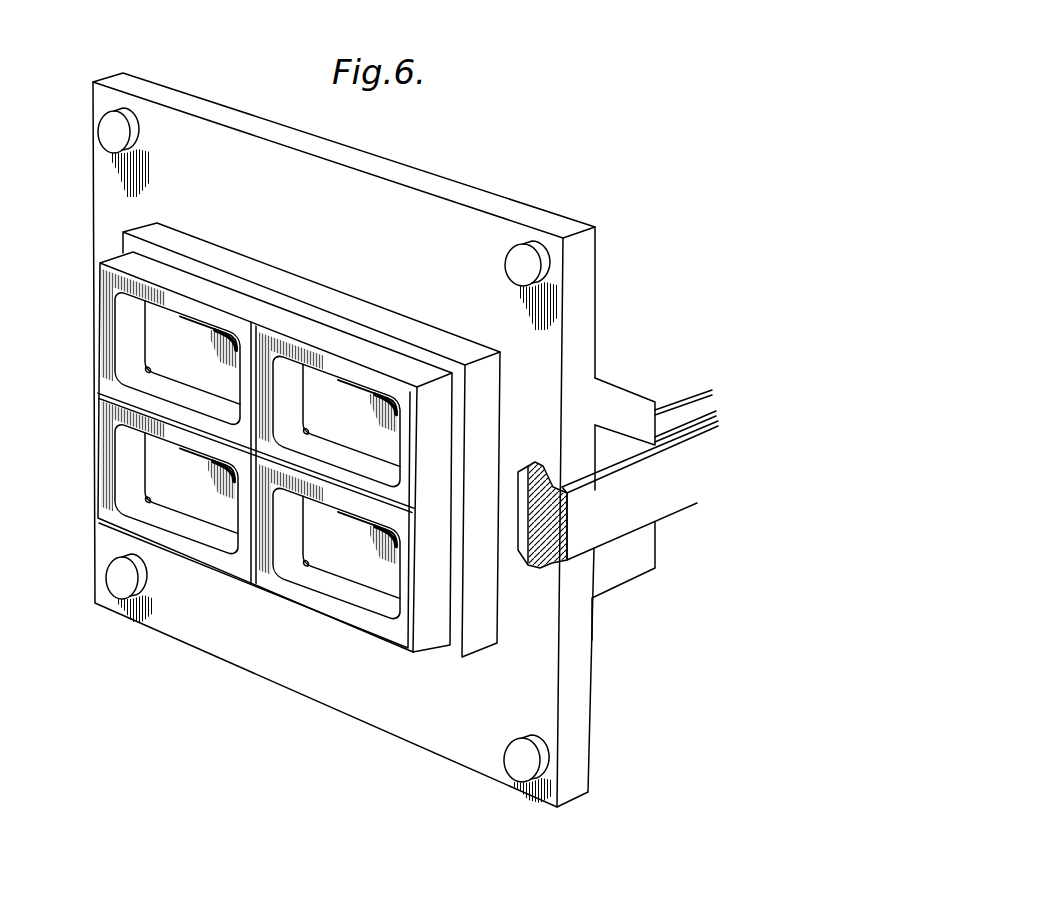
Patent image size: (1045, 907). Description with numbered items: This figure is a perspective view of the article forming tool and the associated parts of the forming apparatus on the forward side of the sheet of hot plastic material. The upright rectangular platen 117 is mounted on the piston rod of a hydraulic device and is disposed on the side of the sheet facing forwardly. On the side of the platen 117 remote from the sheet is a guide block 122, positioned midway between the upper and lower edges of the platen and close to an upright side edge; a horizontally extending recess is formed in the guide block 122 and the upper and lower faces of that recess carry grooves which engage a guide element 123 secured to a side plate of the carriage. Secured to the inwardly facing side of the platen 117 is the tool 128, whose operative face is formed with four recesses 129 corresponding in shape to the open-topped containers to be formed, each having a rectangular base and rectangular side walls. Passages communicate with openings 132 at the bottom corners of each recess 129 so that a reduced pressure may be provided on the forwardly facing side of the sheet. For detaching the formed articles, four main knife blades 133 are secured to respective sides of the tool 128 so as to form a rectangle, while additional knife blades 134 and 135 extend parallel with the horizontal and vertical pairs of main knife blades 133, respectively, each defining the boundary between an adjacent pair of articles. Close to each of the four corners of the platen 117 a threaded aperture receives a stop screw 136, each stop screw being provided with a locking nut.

The platen 117 is at (490, 203).
The guide block 122 is at (642, 410).
The guide element 123 is at (538, 560).
The tool 128 is at (398, 637).
The recess 129 is at (377, 585).
The opening 132 is at (305, 564).
The main knife blade 133 is at (330, 330).
The additional knife blade 134 is at (302, 473).
The additional knife blade 135 is at (253, 502).
The stop screw 136 is at (518, 750).